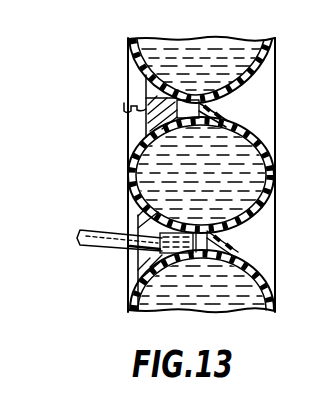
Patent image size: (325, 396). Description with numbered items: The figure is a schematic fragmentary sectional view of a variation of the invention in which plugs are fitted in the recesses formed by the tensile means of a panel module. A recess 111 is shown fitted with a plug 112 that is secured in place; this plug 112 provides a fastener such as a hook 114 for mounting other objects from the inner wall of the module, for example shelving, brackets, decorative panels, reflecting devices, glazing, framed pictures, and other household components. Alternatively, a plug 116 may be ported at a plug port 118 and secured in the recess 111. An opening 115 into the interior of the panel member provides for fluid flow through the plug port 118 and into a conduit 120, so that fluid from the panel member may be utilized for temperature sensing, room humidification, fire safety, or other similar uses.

The recess 111 is at (127, 90).
The plug 112 is at (146, 129).
The hook 114 is at (127, 111).
The opening 115 is at (202, 280).
The plug 116 is at (129, 224).
The plug port 118 is at (114, 250).
The conduit 120 is at (95, 248).